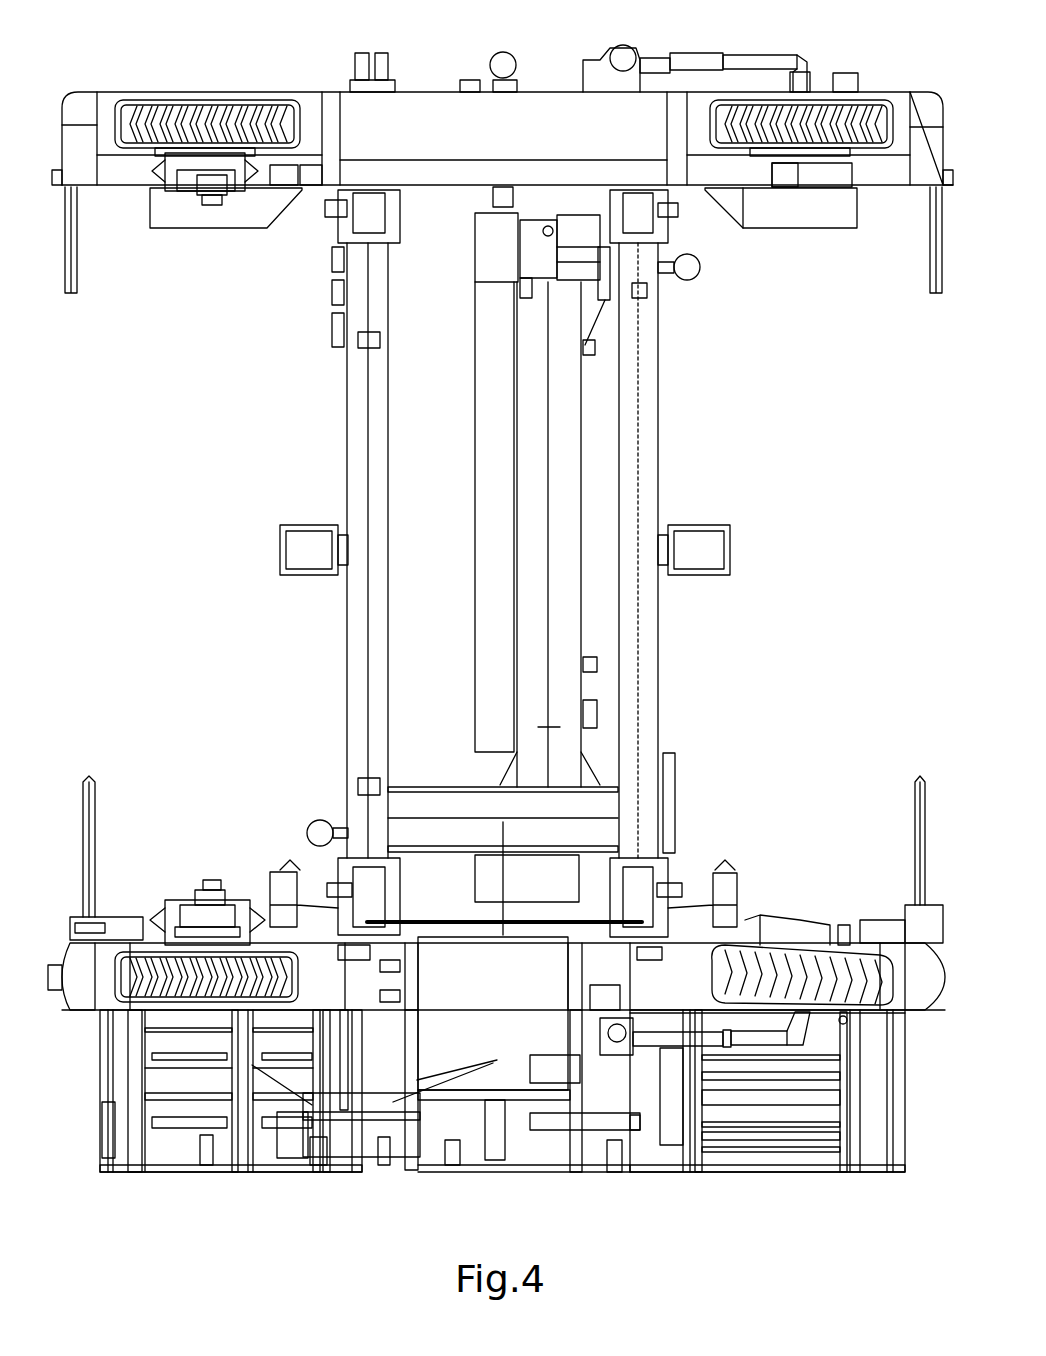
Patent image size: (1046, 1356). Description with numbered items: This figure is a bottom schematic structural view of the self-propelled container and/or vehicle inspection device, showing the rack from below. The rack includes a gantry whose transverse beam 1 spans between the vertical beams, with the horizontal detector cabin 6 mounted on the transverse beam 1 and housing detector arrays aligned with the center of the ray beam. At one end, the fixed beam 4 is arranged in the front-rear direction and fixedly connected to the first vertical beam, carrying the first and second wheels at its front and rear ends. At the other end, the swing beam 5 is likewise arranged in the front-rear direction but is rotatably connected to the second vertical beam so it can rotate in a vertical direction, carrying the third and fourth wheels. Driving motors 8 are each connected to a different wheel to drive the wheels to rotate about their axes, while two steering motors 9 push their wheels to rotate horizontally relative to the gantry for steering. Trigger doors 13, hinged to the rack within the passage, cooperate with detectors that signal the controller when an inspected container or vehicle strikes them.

The transverse beam 1 is at (630, 460).
The fixed beam 4 is at (658, 983).
The swing beam 5 is at (460, 118).
The horizontal detector cabin 6 is at (545, 642).
The driving motor 8 is at (193, 187).
The steering motor 9 is at (607, 63).
The trigger door 13 is at (67, 283).